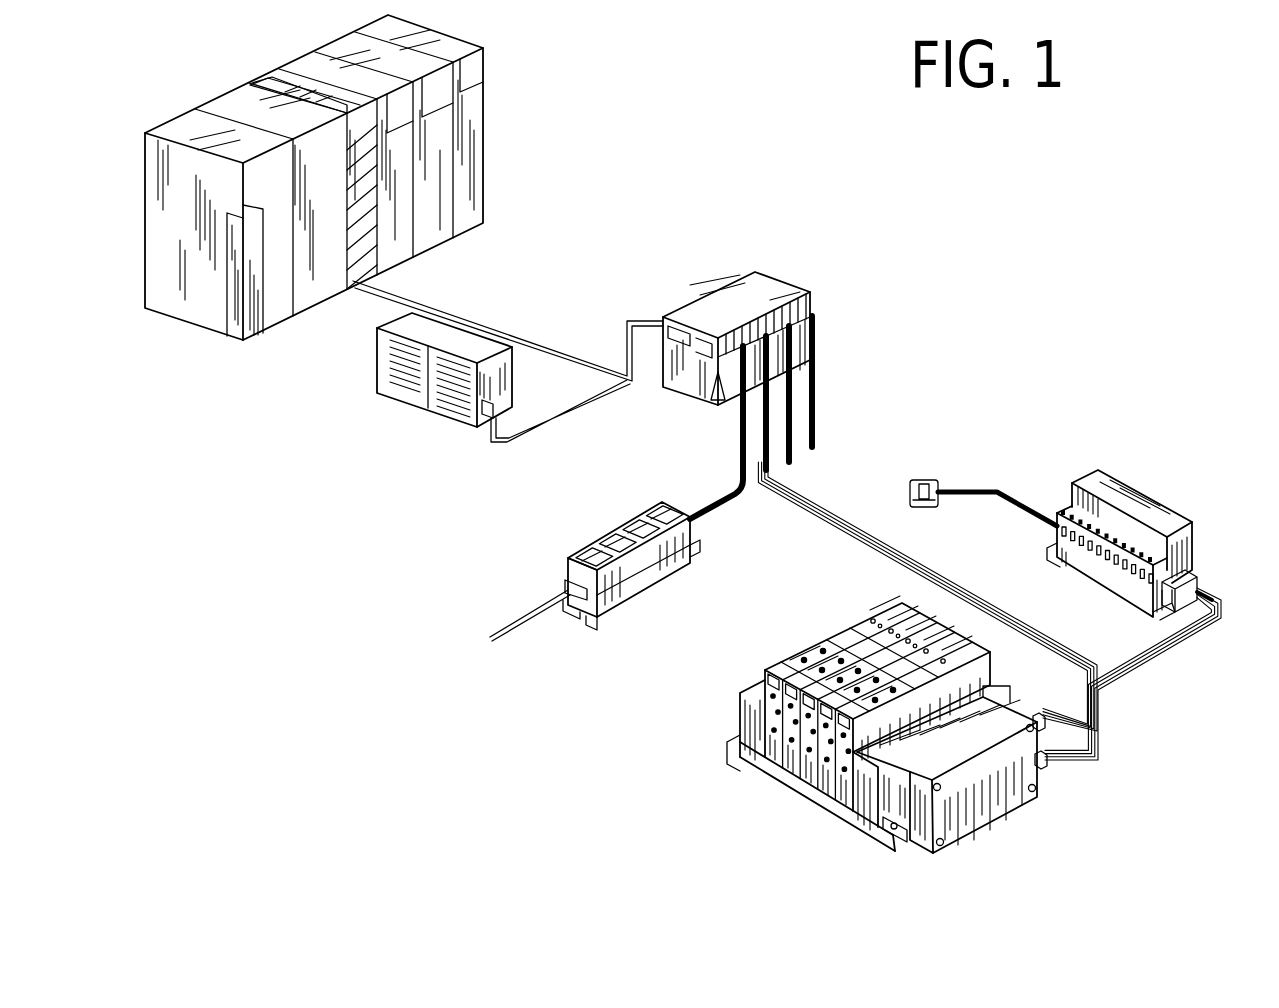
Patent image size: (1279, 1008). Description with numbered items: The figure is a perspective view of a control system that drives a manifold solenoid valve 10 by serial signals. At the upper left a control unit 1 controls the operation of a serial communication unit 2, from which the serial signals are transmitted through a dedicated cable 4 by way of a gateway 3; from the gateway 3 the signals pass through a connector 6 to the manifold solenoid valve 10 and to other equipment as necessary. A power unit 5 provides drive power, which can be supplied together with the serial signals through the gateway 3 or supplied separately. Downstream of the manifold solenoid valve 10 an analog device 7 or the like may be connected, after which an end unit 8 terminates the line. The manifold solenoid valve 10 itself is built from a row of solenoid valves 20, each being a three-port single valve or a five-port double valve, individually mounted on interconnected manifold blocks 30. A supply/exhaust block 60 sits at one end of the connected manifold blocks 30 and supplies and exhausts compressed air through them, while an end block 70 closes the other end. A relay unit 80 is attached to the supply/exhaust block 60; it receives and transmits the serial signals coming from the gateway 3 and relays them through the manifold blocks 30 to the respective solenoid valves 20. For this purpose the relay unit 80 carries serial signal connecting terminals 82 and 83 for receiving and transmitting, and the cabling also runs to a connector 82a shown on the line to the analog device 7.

The control unit 1 is at (160, 186).
The serial communication unit 2 is at (267, 82).
The gateway 3 is at (772, 285).
The dedicated cable 4 is at (845, 526).
The power unit 5 is at (393, 321).
The connector 6 is at (608, 537).
The analog device 7 is at (1144, 500).
The end unit 8 is at (927, 480).
The manifold solenoid valve 10 is at (798, 641).
The solenoid valves 20 is at (870, 628).
The manifold blocks 30 is at (800, 786).
The supply/exhaust block 60 is at (867, 823).
The end block 70 is at (753, 765).
The relay unit 80 is at (997, 795).
The serial signal connecting terminal 82 is at (1046, 768).
The connector 82a is at (1200, 580).
The serial signal connecting terminal 83 is at (1040, 714).